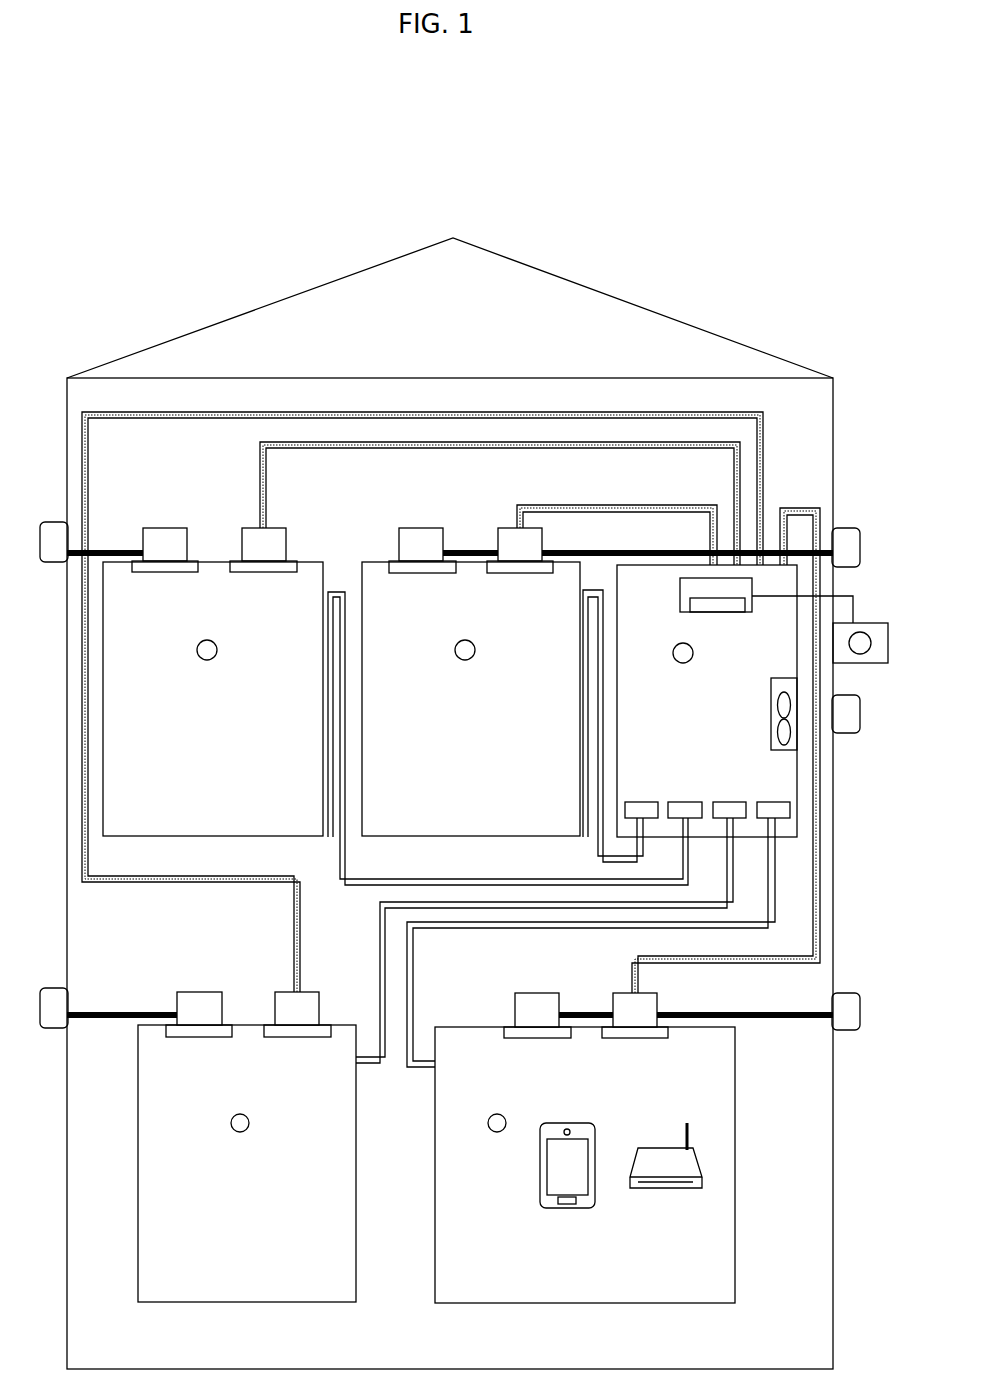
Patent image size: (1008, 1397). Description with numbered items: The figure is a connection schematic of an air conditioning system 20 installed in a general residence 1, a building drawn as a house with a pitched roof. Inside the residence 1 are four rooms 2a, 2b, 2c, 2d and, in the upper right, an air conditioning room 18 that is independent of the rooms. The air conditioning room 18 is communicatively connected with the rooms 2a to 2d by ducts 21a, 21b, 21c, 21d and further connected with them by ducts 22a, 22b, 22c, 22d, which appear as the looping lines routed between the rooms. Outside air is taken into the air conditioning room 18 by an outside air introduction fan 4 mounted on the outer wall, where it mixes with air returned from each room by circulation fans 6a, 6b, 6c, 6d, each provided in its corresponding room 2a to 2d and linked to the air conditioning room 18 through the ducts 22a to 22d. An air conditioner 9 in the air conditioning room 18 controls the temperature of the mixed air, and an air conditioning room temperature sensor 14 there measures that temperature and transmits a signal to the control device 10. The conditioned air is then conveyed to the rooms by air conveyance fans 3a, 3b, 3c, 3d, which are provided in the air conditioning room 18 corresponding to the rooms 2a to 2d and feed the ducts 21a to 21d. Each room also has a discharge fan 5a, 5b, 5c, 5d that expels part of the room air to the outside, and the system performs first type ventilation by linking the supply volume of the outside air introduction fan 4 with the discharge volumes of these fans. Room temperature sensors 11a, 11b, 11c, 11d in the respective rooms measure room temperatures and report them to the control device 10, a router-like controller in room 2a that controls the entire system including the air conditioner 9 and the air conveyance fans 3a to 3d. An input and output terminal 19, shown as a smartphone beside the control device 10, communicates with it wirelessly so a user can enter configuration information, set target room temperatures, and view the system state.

The general residence 1 is at (264, 333).
The air conditioning system 20 is at (681, 258).
The room 2a is at (523, 1302).
The room 2b is at (238, 1302).
The room 2c is at (318, 580).
The room 2d is at (378, 580).
The air conveyance fan 3a is at (777, 802).
The air conveyance fan 3b is at (731, 802).
The air conveyance fan 3c is at (689, 802).
The air conveyance fan 3d is at (642, 802).
The outside air introduction fan 4 is at (782, 680).
The discharge fan 5a is at (530, 1010).
The discharge fan 5b is at (198, 1010).
The discharge fan 5c is at (167, 545).
The discharge fan 5d is at (428, 545).
The circulation fan 6a is at (620, 1010).
The circulation fan 6b is at (287, 1010).
The circulation fan 6c is at (255, 545).
The circulation fan 6d is at (513, 545).
The air conditioner 9 is at (680, 590).
The control device 10 is at (655, 1162).
The room temperature sensor 11a is at (497, 1132).
The room temperature sensor 11b is at (240, 1132).
The room temperature sensor 11c is at (207, 660).
The room temperature sensor 11d is at (465, 660).
The air conditioning room temperature sensor 14 is at (683, 663).
The air conditioning room 18 is at (782, 826).
The input and output terminal 19 is at (585, 1130).
The duct 21a is at (408, 976).
The duct 21b is at (378, 913).
The duct 21c is at (348, 866).
The duct 21d is at (597, 862).
The duct 22a is at (803, 510).
The duct 22b is at (773, 418).
The duct 22c is at (620, 452).
The duct 22d is at (578, 508).